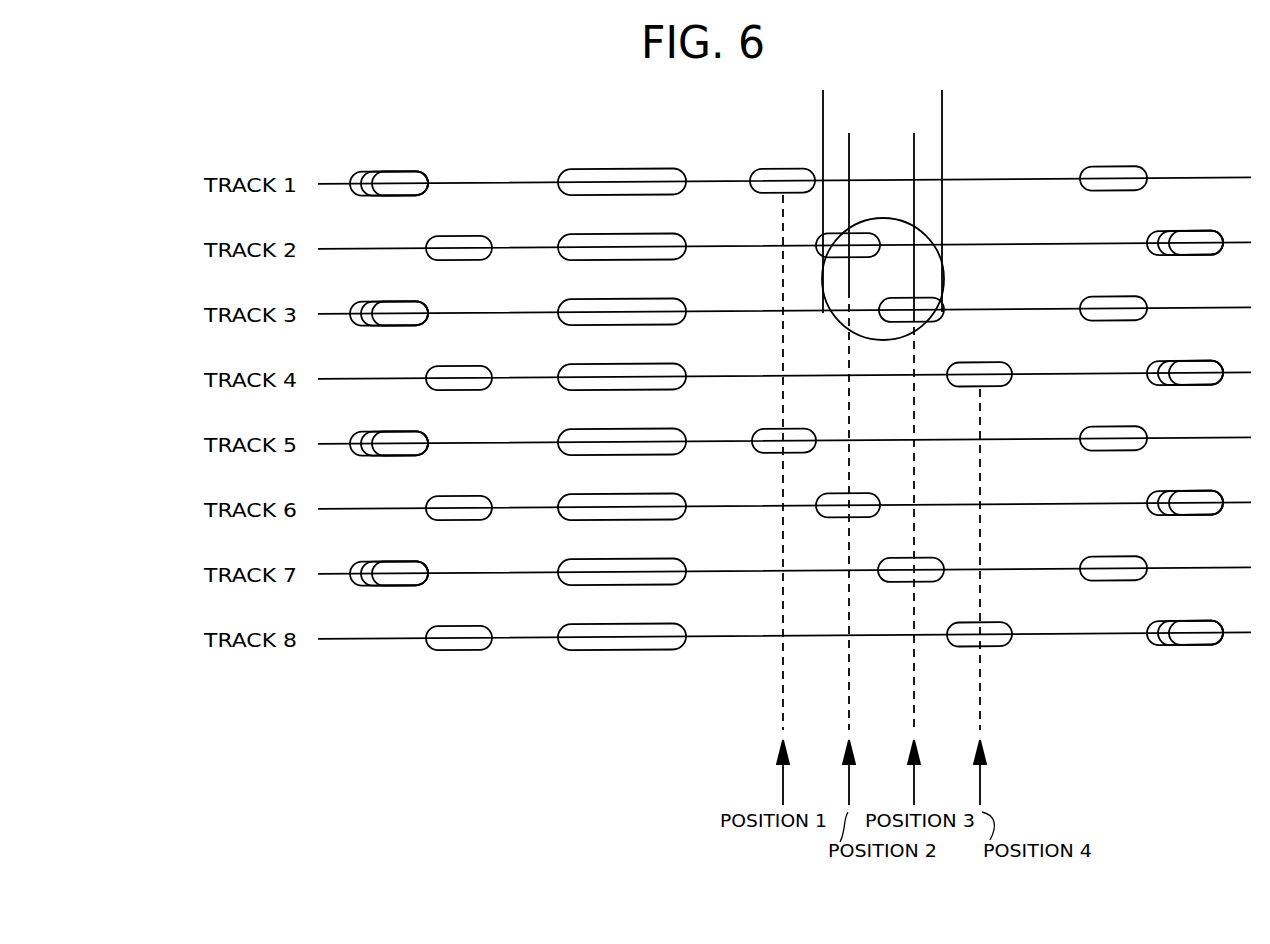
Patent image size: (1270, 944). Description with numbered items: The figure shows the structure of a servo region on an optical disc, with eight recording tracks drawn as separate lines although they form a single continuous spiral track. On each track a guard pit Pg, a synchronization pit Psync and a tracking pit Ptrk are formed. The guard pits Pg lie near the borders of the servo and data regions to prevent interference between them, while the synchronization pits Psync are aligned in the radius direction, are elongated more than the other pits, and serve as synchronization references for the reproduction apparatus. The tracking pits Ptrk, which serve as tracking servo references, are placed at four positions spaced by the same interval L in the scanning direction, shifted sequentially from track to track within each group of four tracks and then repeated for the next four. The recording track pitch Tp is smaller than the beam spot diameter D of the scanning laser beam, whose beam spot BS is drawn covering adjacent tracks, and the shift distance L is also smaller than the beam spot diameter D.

The guard pit Pg is at (448, 650).
The synchronization pit Psync is at (595, 650).
The tracking pit Ptrk is at (800, 453).
The beam spot BS is at (925, 318).
The recording track pitch Tp is at (767, 248).
The beam spot diameter D is at (942, 100).
The interval L is at (914, 143).